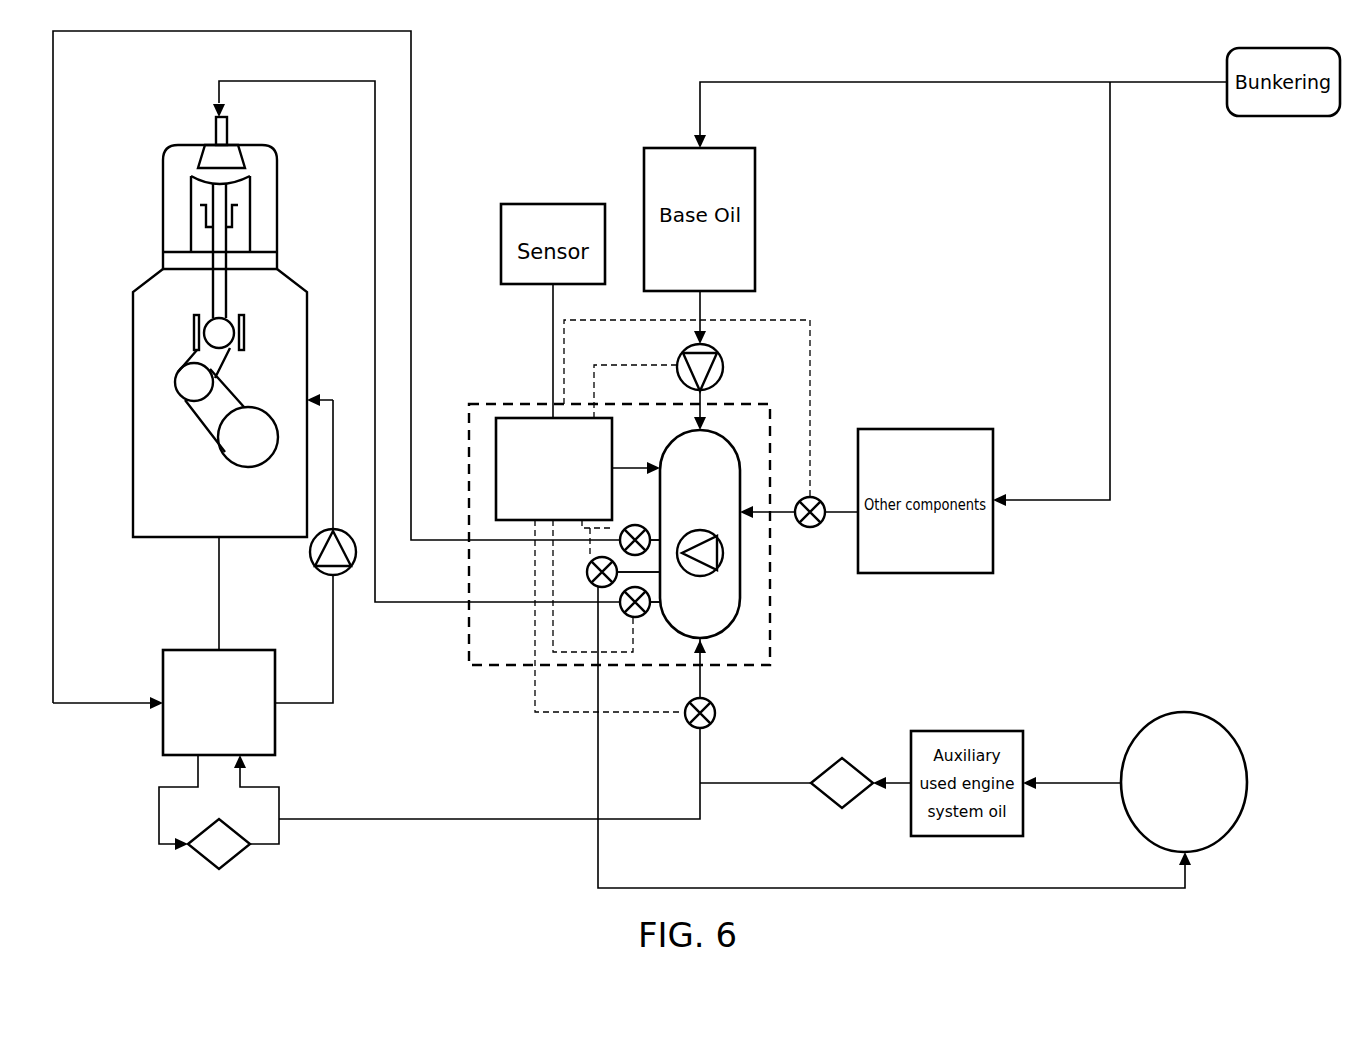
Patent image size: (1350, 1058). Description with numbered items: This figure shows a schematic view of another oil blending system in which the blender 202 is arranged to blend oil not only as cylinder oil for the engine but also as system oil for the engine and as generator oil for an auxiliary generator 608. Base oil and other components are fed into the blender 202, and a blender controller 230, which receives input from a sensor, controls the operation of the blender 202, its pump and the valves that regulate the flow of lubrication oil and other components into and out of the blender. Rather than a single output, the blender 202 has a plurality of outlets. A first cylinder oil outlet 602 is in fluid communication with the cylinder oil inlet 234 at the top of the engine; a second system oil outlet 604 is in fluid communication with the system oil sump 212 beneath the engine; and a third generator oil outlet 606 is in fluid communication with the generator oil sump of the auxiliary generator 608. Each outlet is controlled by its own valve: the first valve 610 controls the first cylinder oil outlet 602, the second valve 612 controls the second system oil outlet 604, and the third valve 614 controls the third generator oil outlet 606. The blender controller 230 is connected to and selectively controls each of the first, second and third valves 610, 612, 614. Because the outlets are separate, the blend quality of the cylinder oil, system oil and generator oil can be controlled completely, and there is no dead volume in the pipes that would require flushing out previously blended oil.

The blender 202 is at (740, 458).
The system oil sump 212 is at (163, 722).
The blender controller 230 is at (512, 417).
The cylinder oil inlet 234 is at (216, 130).
The first cylinder oil outlet 602 is at (660, 537).
The second system oil outlet 604 is at (663, 602).
The third generator oil outlet 606 is at (667, 573).
The auxiliary generator 608 is at (1148, 722).
The first valve 610 is at (620, 542).
The second valve 612 is at (618, 607).
The third valve 614 is at (587, 575).